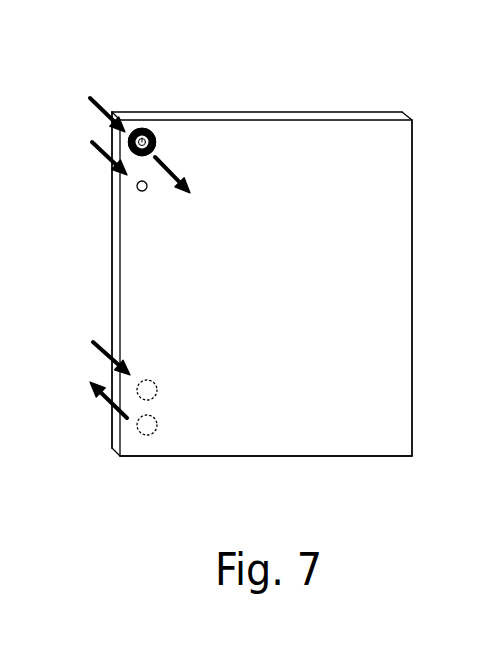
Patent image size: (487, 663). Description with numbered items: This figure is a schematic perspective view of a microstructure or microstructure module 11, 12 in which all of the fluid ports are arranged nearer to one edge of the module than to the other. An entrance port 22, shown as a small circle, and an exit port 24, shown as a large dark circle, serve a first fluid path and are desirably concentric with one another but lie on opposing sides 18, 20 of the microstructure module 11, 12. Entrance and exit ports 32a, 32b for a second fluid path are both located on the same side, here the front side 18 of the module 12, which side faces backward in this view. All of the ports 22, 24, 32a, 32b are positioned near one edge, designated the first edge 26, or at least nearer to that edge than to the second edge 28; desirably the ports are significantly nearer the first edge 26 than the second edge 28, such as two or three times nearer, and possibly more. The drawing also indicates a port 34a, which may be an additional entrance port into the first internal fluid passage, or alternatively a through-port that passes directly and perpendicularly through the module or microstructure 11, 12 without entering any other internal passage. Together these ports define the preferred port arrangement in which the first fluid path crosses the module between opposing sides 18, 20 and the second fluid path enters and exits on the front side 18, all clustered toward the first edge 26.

The microstructure 11 is at (266, 486).
The microstructure module 12 is at (264, 472).
The front side 18 is at (286, 98).
The opposing side 20 is at (265, 202).
The entrance port 22 is at (141, 129).
The exit port 24 is at (156, 142).
The first edge 26 is at (105, 270).
The second edge 28 is at (430, 278).
The entrance port 32a is at (157, 390).
The exit port 32b is at (157, 425).
The additional entrance port 34a is at (142, 191).